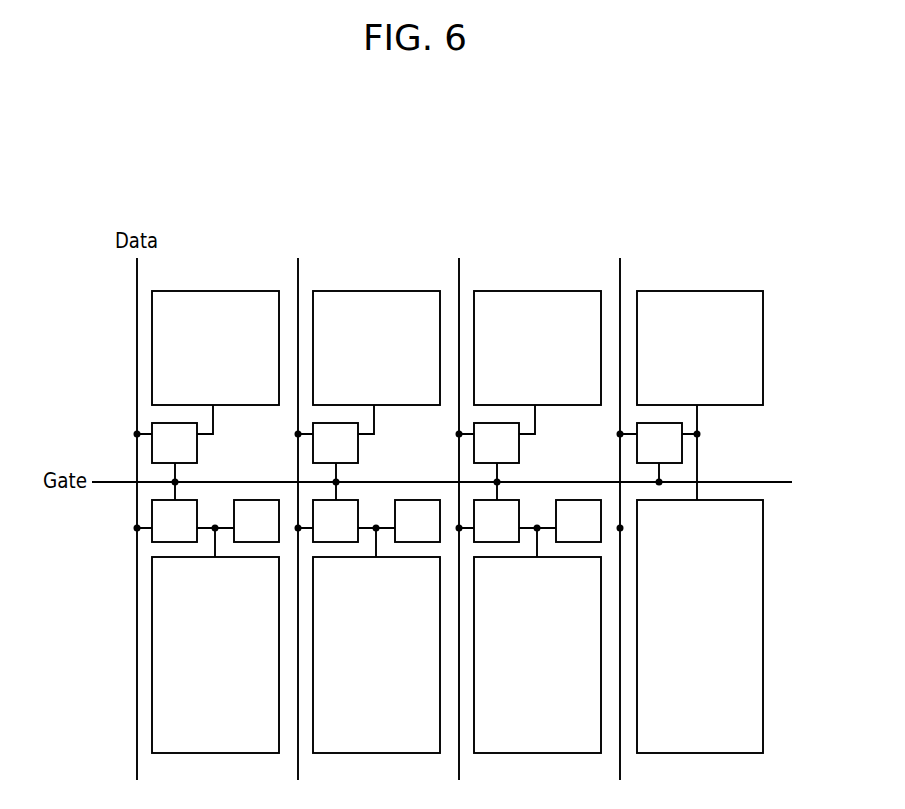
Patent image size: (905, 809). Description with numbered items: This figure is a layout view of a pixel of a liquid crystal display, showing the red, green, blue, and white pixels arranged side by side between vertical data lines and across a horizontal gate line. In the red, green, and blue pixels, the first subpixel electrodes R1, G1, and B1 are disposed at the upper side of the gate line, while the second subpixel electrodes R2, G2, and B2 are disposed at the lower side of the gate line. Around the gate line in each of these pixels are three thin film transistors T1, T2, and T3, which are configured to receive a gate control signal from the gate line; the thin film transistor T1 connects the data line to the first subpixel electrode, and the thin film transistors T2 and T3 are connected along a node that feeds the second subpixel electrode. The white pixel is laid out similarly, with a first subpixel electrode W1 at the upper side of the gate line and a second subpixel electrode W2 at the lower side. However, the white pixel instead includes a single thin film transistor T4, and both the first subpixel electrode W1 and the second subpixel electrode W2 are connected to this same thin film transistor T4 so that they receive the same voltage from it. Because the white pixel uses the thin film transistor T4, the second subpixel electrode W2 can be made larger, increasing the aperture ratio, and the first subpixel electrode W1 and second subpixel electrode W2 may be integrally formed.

The first subpixel electrode R1 is at (215, 348).
The first subpixel electrode G1 is at (376, 348).
The first subpixel electrode B1 is at (537, 348).
The first subpixel electrode W1 is at (700, 348).
The second subpixel electrode R2 is at (215, 655).
The second subpixel electrode G2 is at (376, 655).
The second subpixel electrode B2 is at (537, 655).
The second subpixel electrode W2 is at (700, 626).
The thin film transistor T1 is at (335, 443).
The thin film transistor T2 is at (335, 521).
The thin film transistor T3 is at (417, 521).
The thin film transistor T4 is at (659, 443).